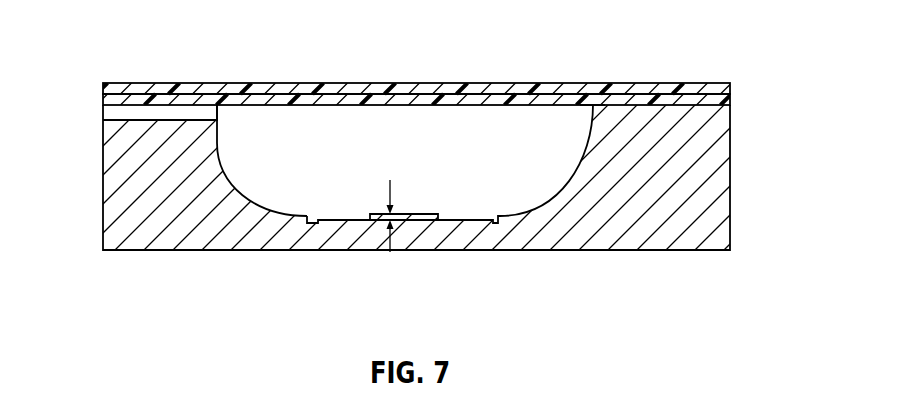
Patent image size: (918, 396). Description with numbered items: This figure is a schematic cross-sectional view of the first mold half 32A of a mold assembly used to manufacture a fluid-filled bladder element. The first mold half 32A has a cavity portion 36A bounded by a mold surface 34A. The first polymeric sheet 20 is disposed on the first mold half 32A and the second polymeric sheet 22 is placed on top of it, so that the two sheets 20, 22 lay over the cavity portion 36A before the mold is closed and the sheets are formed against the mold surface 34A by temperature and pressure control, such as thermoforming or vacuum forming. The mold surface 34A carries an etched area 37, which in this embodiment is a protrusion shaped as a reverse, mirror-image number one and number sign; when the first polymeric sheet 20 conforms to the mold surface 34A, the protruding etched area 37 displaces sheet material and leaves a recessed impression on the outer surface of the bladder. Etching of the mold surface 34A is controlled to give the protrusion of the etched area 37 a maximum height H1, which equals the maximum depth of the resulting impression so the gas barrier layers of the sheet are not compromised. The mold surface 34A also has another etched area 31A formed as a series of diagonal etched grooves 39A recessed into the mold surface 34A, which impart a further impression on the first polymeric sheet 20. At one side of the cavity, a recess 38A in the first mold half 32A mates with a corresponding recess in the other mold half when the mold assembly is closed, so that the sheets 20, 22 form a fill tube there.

The first polymeric sheet 20 is at (732, 97).
The second polymeric sheet 22 is at (732, 86).
The etched area 31A is at (373, 115).
The etched grooves 39A is at (497, 217).
The first mold half 32A is at (720, 204).
The mold surface 34A is at (558, 194).
The cavity portion 36A is at (595, 113).
The etched area 37 is at (403, 214).
The recess 38A is at (137, 115).
The maximum height HI is at (390, 243).